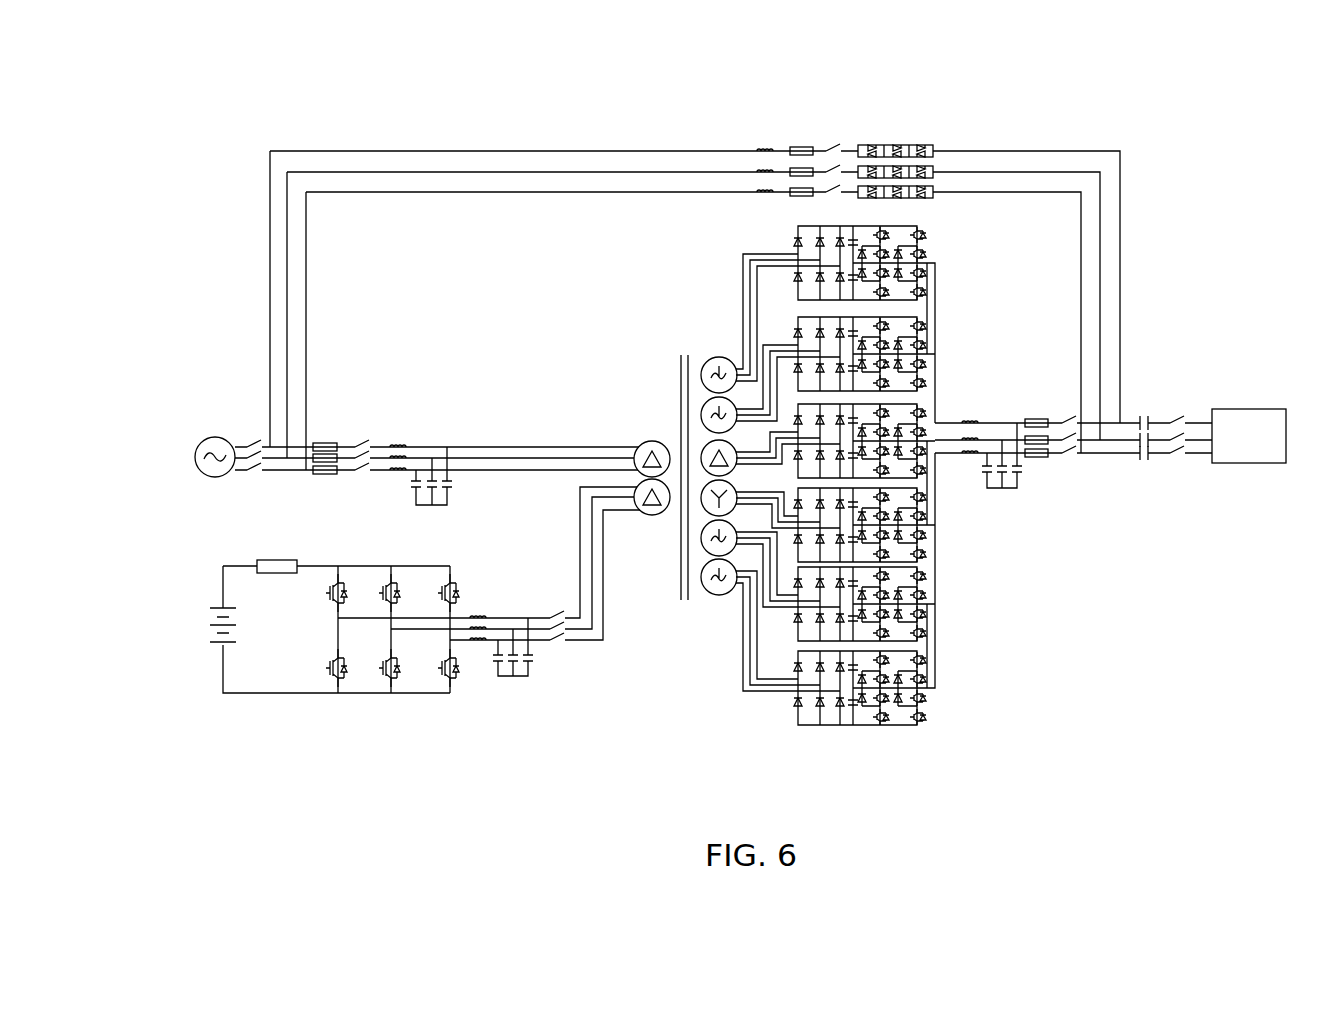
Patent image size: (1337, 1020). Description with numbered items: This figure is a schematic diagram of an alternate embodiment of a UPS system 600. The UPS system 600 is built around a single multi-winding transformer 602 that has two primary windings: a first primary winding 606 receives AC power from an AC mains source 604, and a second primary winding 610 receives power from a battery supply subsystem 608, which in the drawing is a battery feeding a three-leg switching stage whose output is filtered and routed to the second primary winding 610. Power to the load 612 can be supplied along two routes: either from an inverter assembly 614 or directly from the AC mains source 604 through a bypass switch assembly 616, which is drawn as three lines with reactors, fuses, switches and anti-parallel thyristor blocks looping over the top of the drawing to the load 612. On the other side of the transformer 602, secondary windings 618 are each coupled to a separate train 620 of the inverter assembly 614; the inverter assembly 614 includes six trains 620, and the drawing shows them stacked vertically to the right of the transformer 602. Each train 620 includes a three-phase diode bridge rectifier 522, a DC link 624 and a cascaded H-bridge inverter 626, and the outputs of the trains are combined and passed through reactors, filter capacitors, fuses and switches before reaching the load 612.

The UPS system 600 is at (1157, 86).
The multi-winding transformer 602 is at (682, 319).
The AC mains source 604 is at (211, 416).
The first primary winding 606 is at (652, 440).
The battery supply subsystem 608 is at (469, 578).
The second primary winding 610 is at (652, 518).
The load 612 is at (1239, 394).
The inverter assembly 614 is at (943, 713).
The bypass switch assembly 616 is at (869, 116).
The secondary windings 618 is at (717, 341).
The train 620 is at (940, 408).
The rectifier 522 is at (822, 744).
The DC link 624 is at (859, 742).
The cascaded H-bridge inverter 626 is at (907, 742).